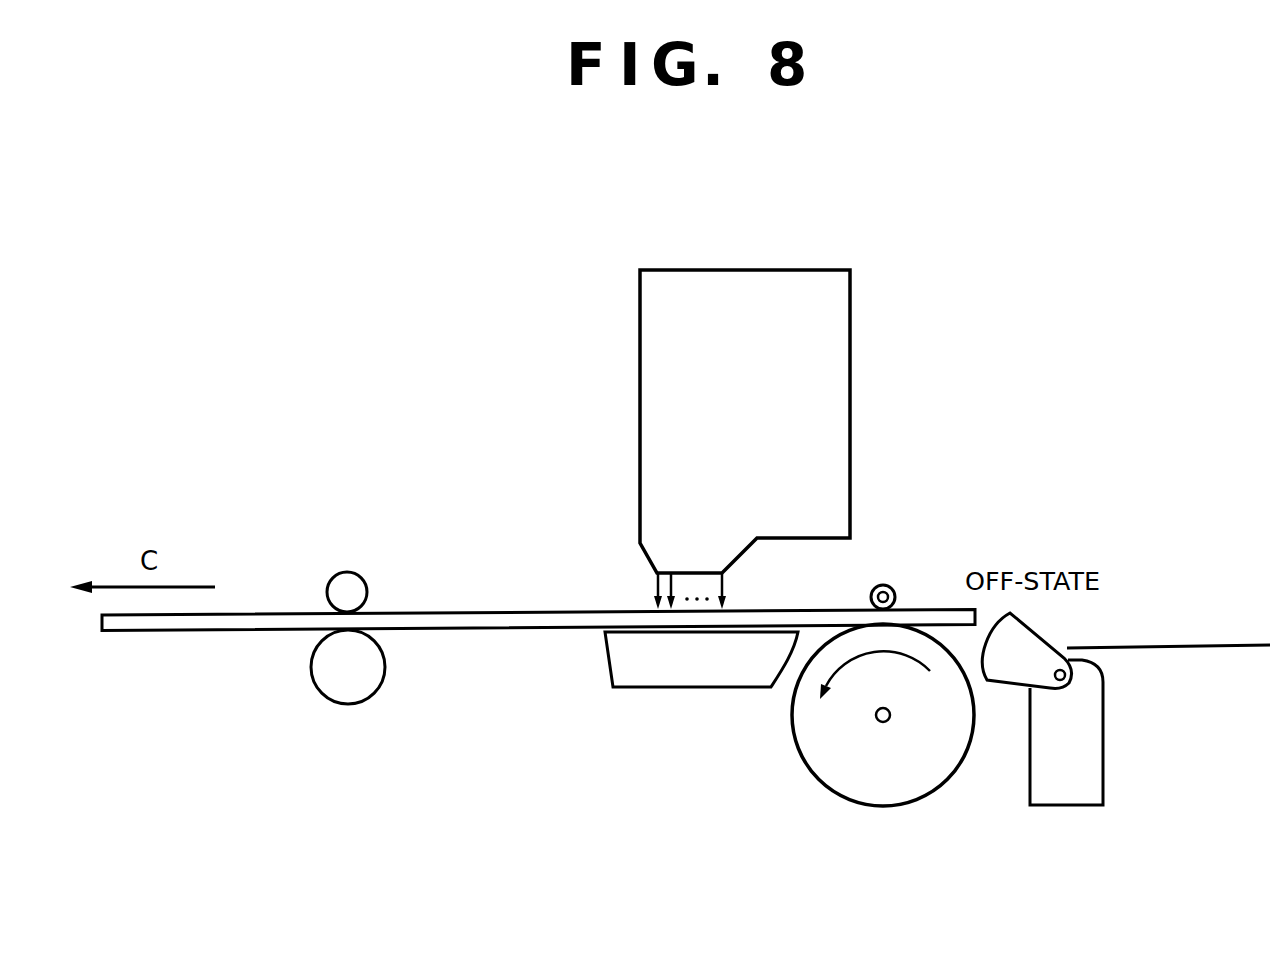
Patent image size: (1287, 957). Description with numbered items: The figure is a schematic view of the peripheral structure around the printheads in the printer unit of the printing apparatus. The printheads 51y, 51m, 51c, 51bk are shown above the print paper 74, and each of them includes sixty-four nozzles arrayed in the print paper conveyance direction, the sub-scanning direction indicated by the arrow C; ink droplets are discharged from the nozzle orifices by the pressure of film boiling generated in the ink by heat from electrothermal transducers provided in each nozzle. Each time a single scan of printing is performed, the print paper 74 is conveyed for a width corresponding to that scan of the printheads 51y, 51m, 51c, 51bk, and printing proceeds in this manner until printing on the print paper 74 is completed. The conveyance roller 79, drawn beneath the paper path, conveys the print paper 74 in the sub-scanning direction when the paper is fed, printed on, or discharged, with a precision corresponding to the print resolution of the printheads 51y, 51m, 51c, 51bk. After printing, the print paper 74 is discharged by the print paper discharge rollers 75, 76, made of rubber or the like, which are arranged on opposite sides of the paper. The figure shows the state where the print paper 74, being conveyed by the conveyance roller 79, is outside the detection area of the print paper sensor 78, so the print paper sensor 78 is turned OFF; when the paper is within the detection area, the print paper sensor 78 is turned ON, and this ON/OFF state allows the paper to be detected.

The printhead 51y is at (844, 390).
The printhead 51m is at (844, 390).
The printhead 51c is at (844, 390).
The printhead 51bk is at (745, 270).
The print paper 74 is at (187, 631).
The print paper discharge roller 75 is at (381, 686).
The print paper discharge roller 76 is at (367, 585).
The print paper sensor 78 is at (1105, 733).
The conveyance roller 79 is at (905, 806).